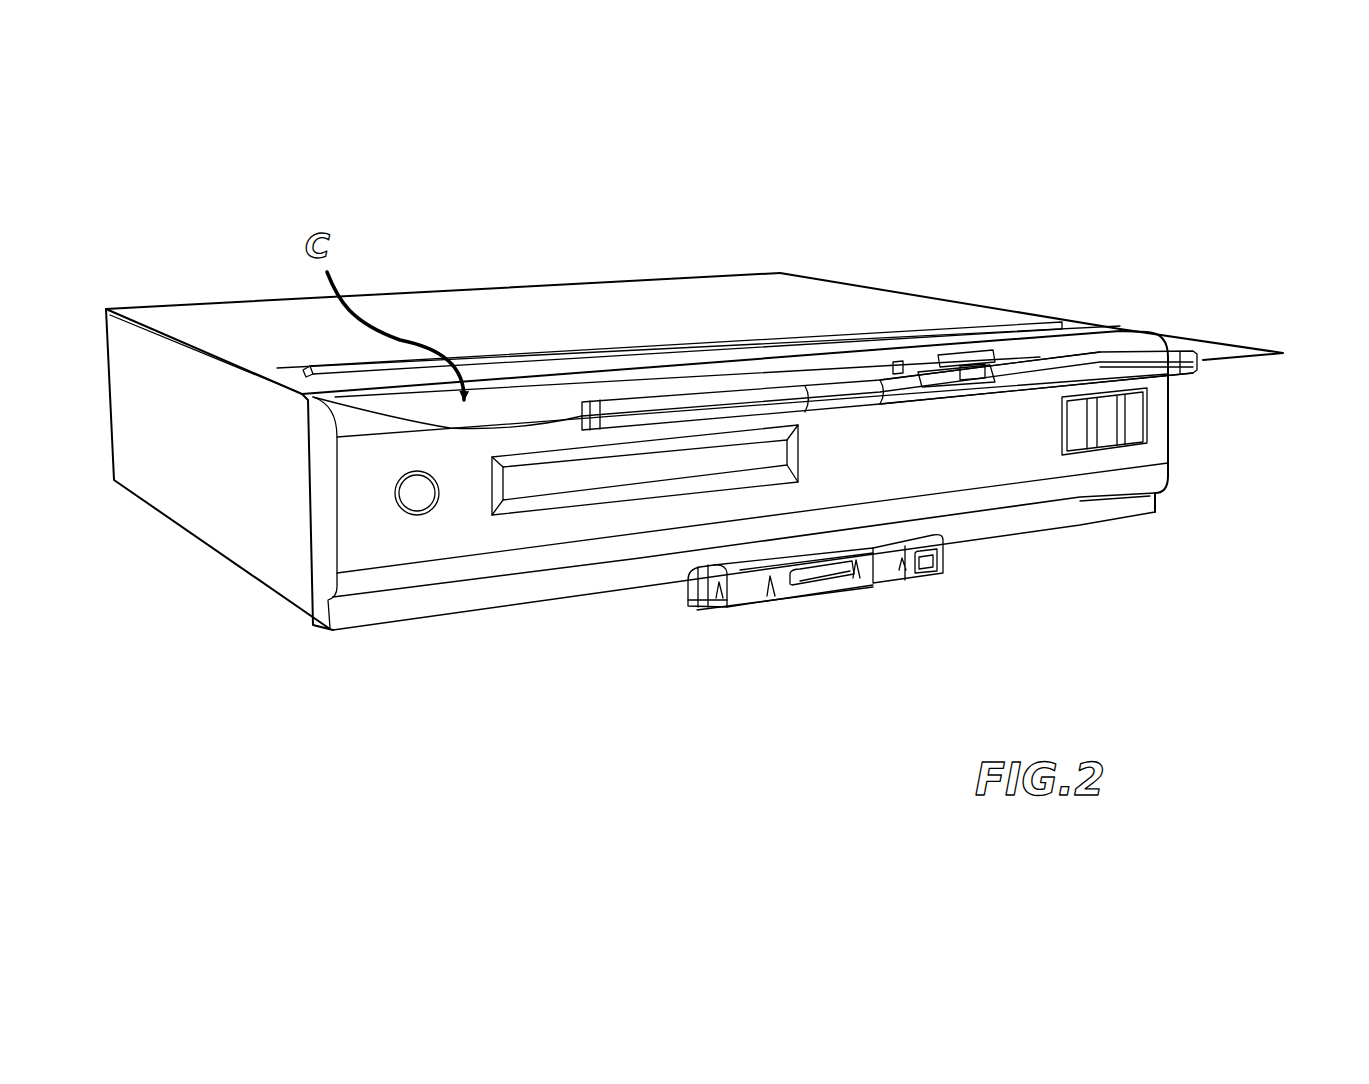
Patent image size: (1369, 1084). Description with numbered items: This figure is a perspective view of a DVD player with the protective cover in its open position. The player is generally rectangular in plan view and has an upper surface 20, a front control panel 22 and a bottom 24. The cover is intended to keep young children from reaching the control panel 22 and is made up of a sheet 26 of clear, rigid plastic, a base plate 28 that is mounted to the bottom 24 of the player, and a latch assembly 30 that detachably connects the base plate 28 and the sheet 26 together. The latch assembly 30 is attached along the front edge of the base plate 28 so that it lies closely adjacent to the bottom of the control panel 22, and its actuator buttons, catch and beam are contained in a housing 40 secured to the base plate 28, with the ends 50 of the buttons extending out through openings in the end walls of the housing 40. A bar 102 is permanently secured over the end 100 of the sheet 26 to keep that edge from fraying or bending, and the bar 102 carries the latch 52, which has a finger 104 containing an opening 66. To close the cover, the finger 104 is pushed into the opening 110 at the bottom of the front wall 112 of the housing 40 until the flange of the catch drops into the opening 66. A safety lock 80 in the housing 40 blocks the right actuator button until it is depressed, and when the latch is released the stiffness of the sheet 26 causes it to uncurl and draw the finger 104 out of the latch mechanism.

The upper surface 20 is at (670, 330).
The front control panel 22 is at (1089, 467).
The bottom 24 is at (271, 596).
The sheet 26 is at (1209, 336).
The base plate 28 is at (708, 614).
The latch assembly 30 is at (1022, 548).
The housing 40 is at (903, 564).
The ends of the buttons 50 is at (686, 588).
The latch 52 is at (945, 352).
The opening 66 is at (936, 372).
The safety lock 80 is at (946, 567).
The end of the sheet 100 is at (1225, 365).
The bar 102 is at (1102, 360).
The finger 104 is at (976, 370).
The opening 110 is at (800, 585).
The front wall 112 is at (823, 563).